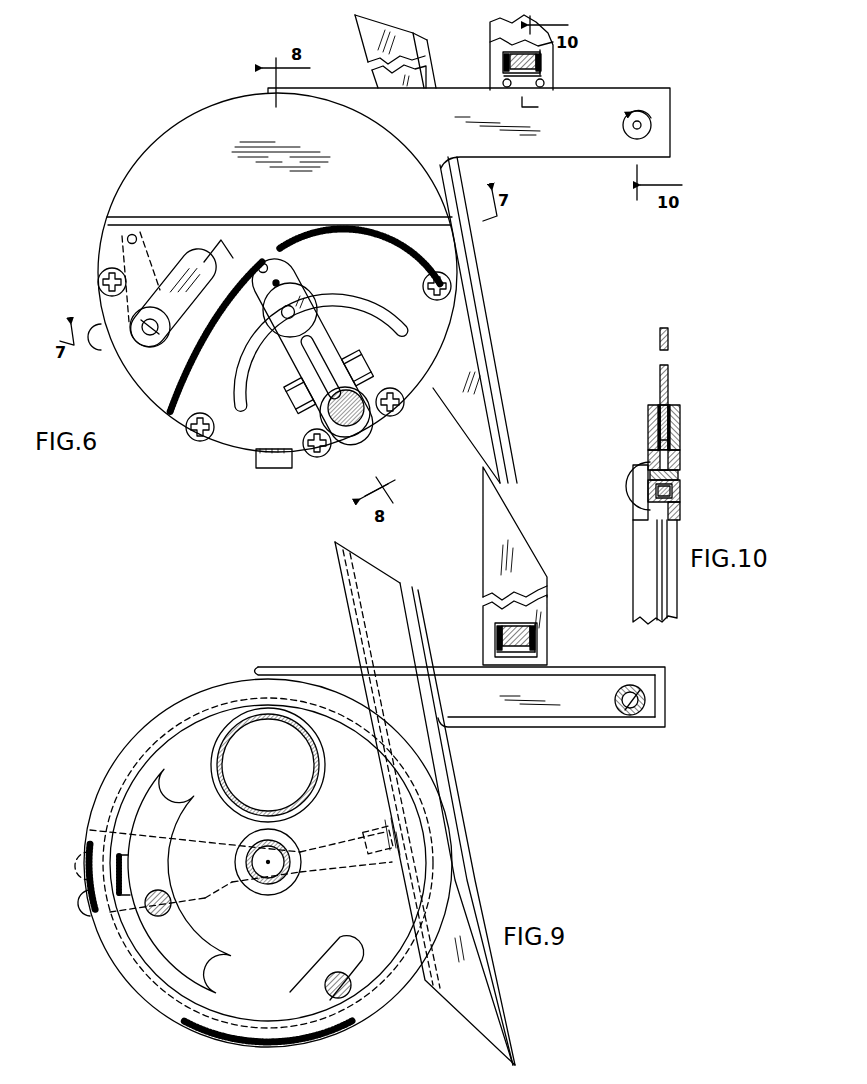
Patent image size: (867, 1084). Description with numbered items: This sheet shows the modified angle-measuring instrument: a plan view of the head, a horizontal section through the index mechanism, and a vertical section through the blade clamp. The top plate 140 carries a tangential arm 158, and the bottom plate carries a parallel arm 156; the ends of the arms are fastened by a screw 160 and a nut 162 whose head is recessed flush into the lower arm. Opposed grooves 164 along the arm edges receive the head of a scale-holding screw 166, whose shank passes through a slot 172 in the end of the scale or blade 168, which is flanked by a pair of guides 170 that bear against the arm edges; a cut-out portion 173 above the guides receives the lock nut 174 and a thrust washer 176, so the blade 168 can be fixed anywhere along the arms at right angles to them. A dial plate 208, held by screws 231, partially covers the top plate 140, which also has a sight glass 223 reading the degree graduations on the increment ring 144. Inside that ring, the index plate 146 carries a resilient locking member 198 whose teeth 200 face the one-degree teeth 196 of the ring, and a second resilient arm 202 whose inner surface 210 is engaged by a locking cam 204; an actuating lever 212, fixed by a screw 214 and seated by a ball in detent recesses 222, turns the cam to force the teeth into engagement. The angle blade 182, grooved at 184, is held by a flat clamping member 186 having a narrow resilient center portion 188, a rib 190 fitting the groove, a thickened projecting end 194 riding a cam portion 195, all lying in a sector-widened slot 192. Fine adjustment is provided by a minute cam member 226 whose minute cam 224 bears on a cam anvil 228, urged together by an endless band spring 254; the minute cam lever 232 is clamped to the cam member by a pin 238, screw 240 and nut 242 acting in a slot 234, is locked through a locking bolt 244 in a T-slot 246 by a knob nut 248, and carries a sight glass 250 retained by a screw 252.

In FIG. 6, the top plate 140 is at (116, 199).
In FIG. 9, the increment ring 144 is at (105, 791).
In FIG. 9, the index plate 146 is at (210, 983).
In FIG. 10, the arm 156 is at (680, 520).
In FIG. 9, the arm 156 is at (605, 709).
In FIG. 6, the arm 158 is at (575, 148).
In FIG. 10, the arm 158 is at (646, 517).
In FIG. 6, the screw 160 is at (650, 123).
In FIG. 10, the screw 160 is at (640, 490).
In FIG. 9, the screw 160 is at (633, 716).
In FIG. 10, the nut 162 is at (680, 494).
In FIG. 9, the nut 162 is at (646, 700).
In FIG. 10, the grooves 164 is at (676, 472).
In FIG. 9, the grooves 164 is at (556, 722).
In FIG. 10, the scale-holding screw 166 is at (676, 452).
In FIG. 6, the scale or blade 168 is at (491, 31).
In FIG. 10, the scale or blade 168 is at (667, 352).
In FIG. 9, the scale or blade 168 is at (486, 532).
In FIG. 6, the guides 170 is at (545, 88).
In FIG. 10, the guides 170 is at (682, 442).
In FIG. 10, the slot 172 is at (648, 440).
In FIG. 6, the cut-out portion 173 is at (546, 57).
In FIG. 9, the cut-out portion 173 is at (540, 637).
In FIG. 6, the lock nut 174 is at (510, 62).
In FIG. 10, the lock nut 174 is at (648, 405).
In FIG. 9, the lock nut 174 is at (537, 635).
In FIG. 6, the thrust washer 176 is at (505, 79).
In FIG. 10, the thrust washer 176 is at (648, 425).
In FIG. 9, the thrust washer 176 is at (496, 653).
In FIG. 6, the angle blade 182 is at (475, 390).
In FIG. 10, the angle blade 182 is at (660, 592).
In FIG. 9, the angle blade 182 is at (478, 1003).
In FIG. 6, the groove 184 is at (496, 434).
In FIG. 9, the groove 184 is at (498, 1047).
In FIG. 9, the clamping member 186 is at (345, 835).
In FIG. 9, the resilient center portion 188 is at (226, 888).
In FIG. 9, the rib 190 is at (378, 828).
In FIG. 9, the slot 192 is at (330, 862).
In FIG. 6, the end 194 is at (93, 322).
In FIG. 9, the end 194 is at (80, 866).
In FIG. 9, the cam portion 195 is at (80, 908).
In FIG. 9, the teeth 196 is at (262, 1025).
In FIG. 9, the locking member 198 is at (118, 841).
In FIG. 9, the teeth 200 is at (112, 882).
In FIG. 9, the resilient arm 202 is at (158, 946).
In FIG. 9, the locking cam 204 is at (170, 906).
In FIG. 6, the dial plate 208 is at (124, 374).
In FIG. 9, the radially inner surface 210 is at (212, 957).
In FIG. 6, the actuating lever 212 is at (201, 257).
In FIG. 6, the screw 214 is at (147, 343).
In FIG. 6, the detent recesses 222 is at (127, 241).
In FIG. 6, the sight glass 223 is at (279, 474).
In FIG. 9, the minute cam 224 is at (322, 975).
In FIG. 6, the minute cam member 226 is at (352, 420).
In FIG. 9, the cam anvil 228 is at (368, 978).
In FIG. 6, the screws 231 is at (198, 440).
In FIG. 6, the minute cam lever 232 is at (325, 340).
In FIG. 6, the slot 234 is at (307, 356).
In FIG. 6, the pin 238 is at (322, 413).
In FIG. 6, the screw 240 is at (362, 366).
In FIG. 6, the nut 242 is at (295, 402).
In FIG. 6, the locking bolt 244 is at (283, 313).
In FIG. 6, the T-slot 246 is at (239, 398).
In FIG. 6, the nut 248 is at (298, 298).
In FIG. 6, the sight glass 250 is at (266, 257).
In FIG. 6, the screw 252 is at (280, 282).
In FIG. 9, the spring 254 is at (228, 752).